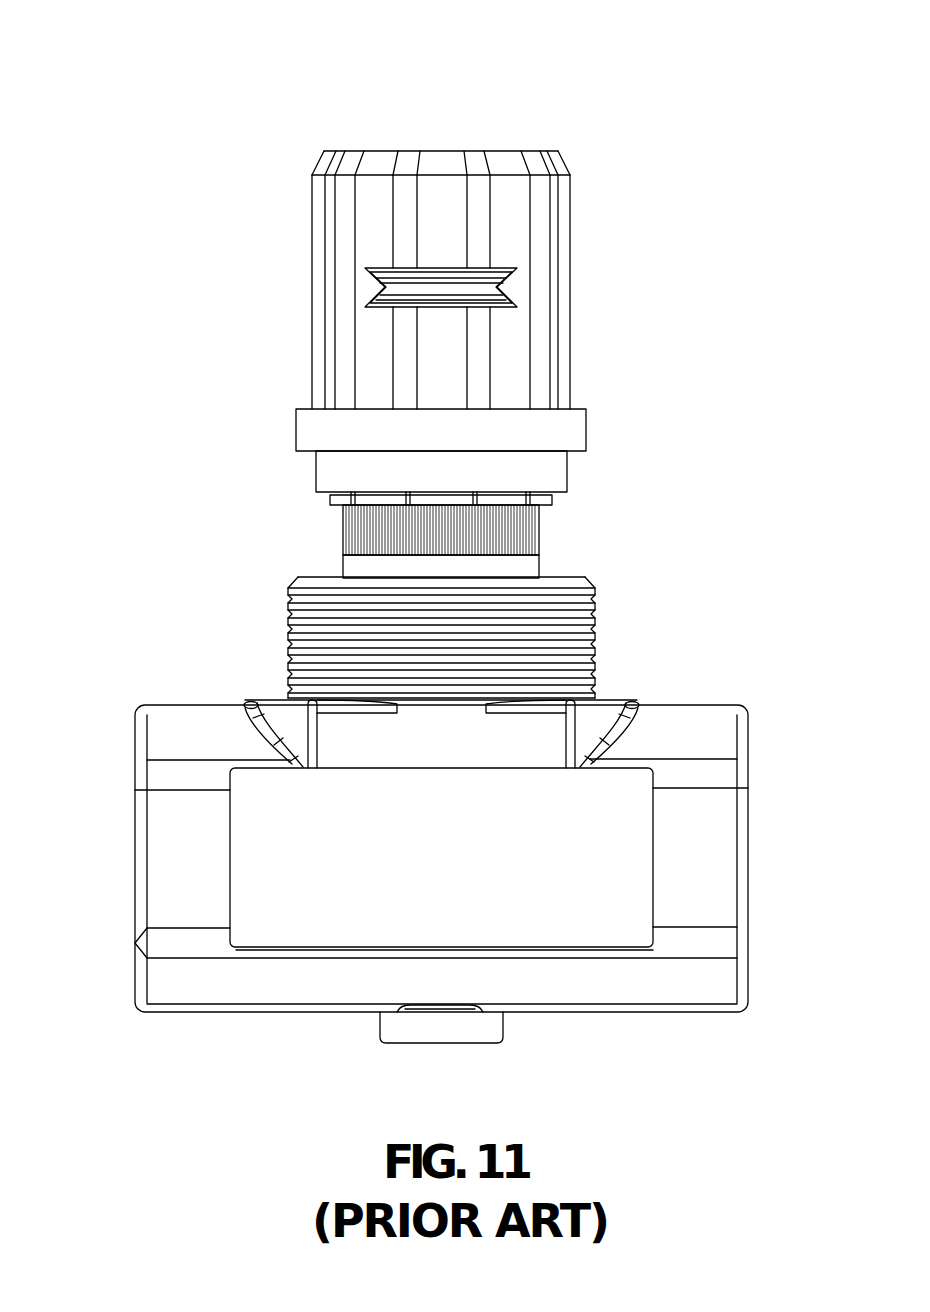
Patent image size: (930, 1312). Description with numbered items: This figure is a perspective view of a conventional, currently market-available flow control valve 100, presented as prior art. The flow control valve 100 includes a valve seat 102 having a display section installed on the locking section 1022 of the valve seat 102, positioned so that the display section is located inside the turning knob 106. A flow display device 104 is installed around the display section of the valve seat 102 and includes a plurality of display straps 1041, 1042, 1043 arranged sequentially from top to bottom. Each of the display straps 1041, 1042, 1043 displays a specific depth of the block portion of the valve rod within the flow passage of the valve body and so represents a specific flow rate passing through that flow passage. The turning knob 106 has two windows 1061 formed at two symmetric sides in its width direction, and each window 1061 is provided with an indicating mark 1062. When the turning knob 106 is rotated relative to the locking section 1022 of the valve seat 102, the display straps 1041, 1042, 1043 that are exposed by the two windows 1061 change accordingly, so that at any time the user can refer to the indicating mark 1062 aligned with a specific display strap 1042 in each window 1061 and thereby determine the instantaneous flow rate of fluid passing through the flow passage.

The flow control valve 100 is at (118, 83).
The valve seat 102 is at (692, 528).
The locking section 1022 is at (507, 532).
The flow display device 104 is at (197, 232).
The display strap 1041 is at (388, 271).
The display strap 1042 is at (388, 287).
The display strap 1043 is at (388, 301).
The turning knob 106 is at (563, 222).
The window 1061 is at (442, 268).
The indicating mark 1062 is at (503, 287).